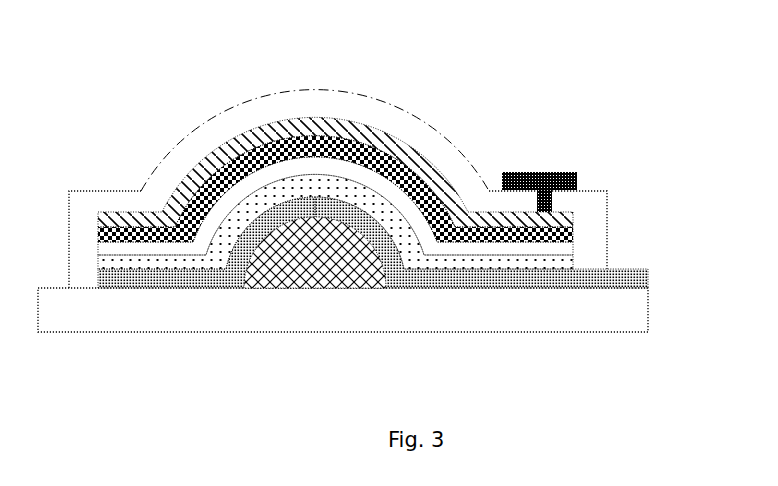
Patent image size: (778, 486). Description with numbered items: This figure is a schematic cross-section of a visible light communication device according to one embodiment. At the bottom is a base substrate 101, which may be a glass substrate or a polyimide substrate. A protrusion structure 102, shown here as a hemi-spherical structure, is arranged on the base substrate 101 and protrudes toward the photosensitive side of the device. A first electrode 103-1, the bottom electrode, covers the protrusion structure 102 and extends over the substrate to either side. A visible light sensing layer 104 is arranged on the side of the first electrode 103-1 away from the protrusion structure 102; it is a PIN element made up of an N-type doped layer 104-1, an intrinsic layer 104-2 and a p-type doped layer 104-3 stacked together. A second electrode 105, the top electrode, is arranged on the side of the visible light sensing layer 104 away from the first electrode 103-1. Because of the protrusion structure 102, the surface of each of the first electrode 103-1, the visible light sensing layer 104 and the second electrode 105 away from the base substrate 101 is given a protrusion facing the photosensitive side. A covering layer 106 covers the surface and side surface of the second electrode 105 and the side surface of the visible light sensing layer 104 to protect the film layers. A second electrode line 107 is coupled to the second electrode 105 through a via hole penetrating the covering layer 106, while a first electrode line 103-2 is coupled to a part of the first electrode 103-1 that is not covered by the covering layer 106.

The base substrate 101 is at (473, 312).
The protrusion structure 102 is at (310, 268).
The first electrode 103-1 is at (185, 276).
The first electrode line 103-2 is at (627, 275).
The visible light sensing layer 104 is at (418, 202).
The N-type doped layer 104-1 is at (573, 233).
The intrinsic layer 104-2 is at (565, 248).
The p-type doped layer 104-3 is at (565, 265).
The second electrode 105 is at (442, 185).
The covering layer 106 is at (382, 120).
The second electrode line 107 is at (562, 172).